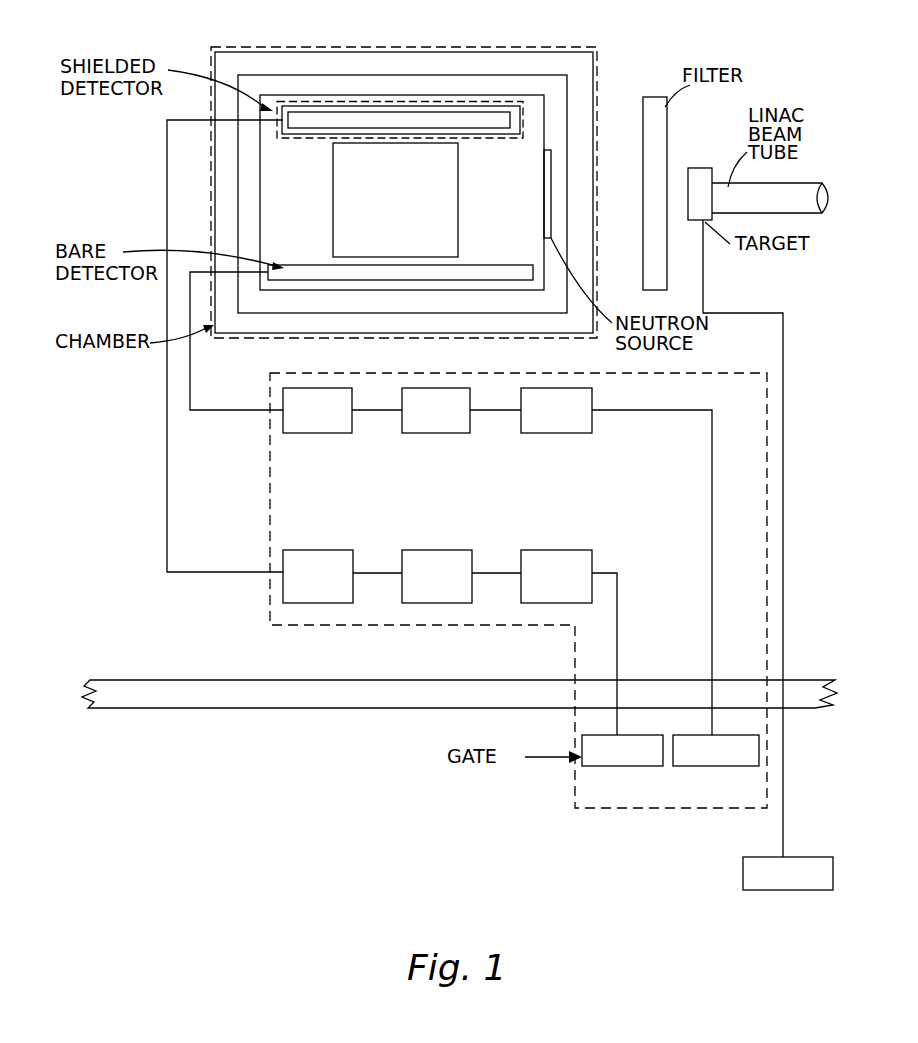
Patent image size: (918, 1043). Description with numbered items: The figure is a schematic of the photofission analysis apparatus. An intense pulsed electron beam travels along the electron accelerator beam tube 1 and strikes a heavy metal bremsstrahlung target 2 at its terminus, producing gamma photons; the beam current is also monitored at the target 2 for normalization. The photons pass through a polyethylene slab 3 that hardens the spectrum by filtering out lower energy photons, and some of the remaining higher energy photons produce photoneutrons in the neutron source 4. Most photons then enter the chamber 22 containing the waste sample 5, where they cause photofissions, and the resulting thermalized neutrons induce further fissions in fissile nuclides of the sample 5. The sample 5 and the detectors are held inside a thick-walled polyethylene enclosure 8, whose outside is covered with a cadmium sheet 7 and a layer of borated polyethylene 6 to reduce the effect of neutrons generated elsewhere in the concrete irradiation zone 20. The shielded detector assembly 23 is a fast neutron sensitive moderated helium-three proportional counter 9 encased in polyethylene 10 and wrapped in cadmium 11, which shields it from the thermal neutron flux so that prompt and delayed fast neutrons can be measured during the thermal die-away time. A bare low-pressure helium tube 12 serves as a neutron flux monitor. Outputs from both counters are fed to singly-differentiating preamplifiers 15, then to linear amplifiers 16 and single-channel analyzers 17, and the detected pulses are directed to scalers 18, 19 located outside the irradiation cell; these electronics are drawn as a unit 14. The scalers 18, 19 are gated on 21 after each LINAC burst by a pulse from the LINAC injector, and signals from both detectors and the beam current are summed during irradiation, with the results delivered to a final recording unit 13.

The electron accelerator beam tube 1 is at (795, 183).
The bremsstrahlung target 2 is at (691, 168).
The polyethylene slab 3 is at (667, 283).
The neutron source 4 is at (549, 157).
The waste sample 5 is at (333, 223).
The borated polyethylene layer 6 is at (543, 328).
The cadmium sheet 7 is at (510, 316).
The polyethylene enclosure 8 is at (471, 300).
The proportional counter 9 is at (338, 117).
The polyethylene 10 is at (390, 108).
The cadmium 11 is at (447, 103).
The bare tube 12 is at (298, 274).
The recorder/computer 13 is at (743, 880).
The electronics unit 14 is at (776, 499).
The singly-differentiating preamplifiers 15 is at (318, 549).
The linear amplifiers 16 is at (436, 549).
The single-channel analyzers 17 is at (553, 549).
The scaler 18 is at (638, 770).
The scaler 19 is at (733, 770).
The concrete irradiation zone 20 is at (830, 680).
The gate 21 is at (558, 762).
The chamber 22 is at (204, 299).
The moderated helium-3 proportional counter 23 is at (398, 86).